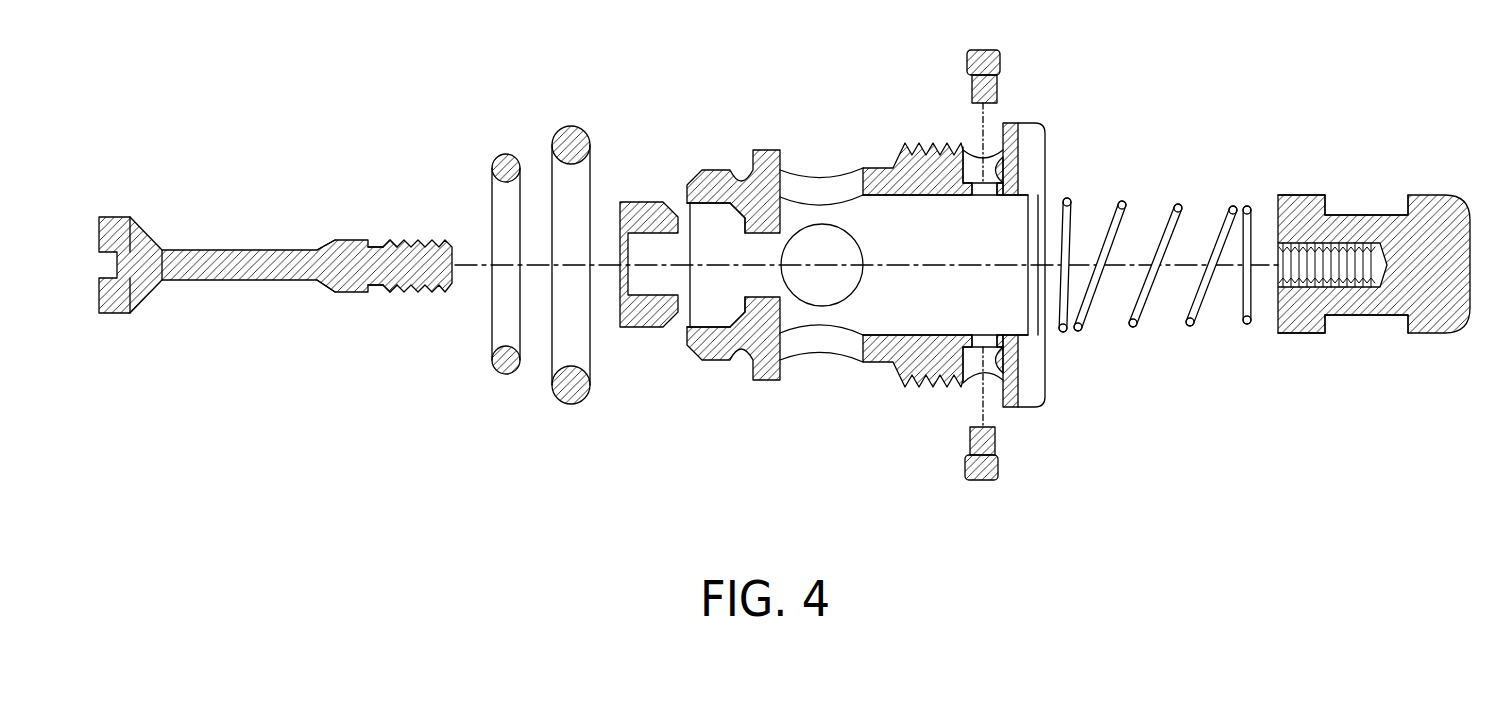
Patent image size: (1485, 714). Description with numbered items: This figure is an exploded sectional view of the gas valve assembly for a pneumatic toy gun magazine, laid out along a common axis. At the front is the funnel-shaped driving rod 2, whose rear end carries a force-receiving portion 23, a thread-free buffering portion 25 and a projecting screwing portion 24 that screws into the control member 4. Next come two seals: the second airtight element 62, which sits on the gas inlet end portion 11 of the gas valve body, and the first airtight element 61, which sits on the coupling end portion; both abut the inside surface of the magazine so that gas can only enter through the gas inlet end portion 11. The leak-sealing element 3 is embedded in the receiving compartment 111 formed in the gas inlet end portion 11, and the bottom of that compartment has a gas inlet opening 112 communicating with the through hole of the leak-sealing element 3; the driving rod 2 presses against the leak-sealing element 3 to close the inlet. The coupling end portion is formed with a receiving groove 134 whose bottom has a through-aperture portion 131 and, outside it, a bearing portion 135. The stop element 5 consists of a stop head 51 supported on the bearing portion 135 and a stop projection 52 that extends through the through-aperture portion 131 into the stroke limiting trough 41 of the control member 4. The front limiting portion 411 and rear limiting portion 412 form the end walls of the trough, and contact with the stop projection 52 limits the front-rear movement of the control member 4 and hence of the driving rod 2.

The driving rod 2 is at (234, 236).
The force-receiving portion 23 is at (331, 240).
The screwing portion 24 is at (431, 241).
The thread-free buffering portion 25 is at (376, 246).
The leak-sealing element 3 is at (642, 202).
The first airtight element 61 is at (562, 393).
The second airtight element 62 is at (494, 367).
The gas inlet end portion 11 is at (709, 349).
The receiving compartment 111 is at (690, 309).
The gas inlet opening 112 is at (745, 290).
The through-aperture portion 131 is at (975, 196).
The receiving groove 134 is at (985, 158).
The bearing portion 135 is at (997, 166).
The stop element 5 is at (901, 241).
The stop head 51 is at (967, 52).
The stop projection 52 is at (933, 262).
The control member 4 is at (1373, 264).
The stroke limiting trough 41 is at (1373, 316).
The front limiting portion 411 is at (1325, 208).
The rear limiting portion 412 is at (1407, 210).